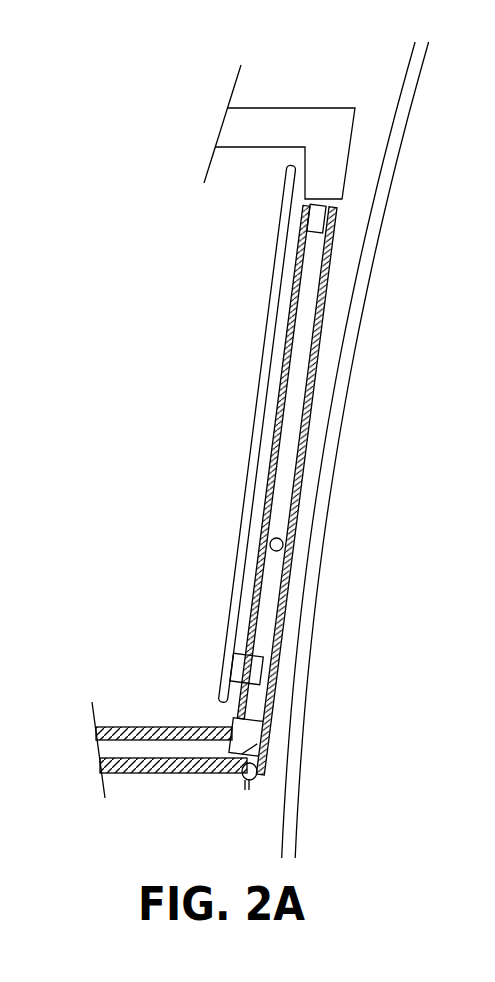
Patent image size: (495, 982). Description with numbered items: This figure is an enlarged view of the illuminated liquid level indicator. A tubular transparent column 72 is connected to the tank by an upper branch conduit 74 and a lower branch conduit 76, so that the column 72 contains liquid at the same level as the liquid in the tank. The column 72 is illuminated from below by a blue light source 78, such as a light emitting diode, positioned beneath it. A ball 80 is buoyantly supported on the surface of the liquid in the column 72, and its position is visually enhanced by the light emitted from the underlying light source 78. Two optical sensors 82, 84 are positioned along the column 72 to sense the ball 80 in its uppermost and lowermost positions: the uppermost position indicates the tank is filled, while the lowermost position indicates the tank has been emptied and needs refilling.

The tubular transparent column 72 is at (315, 399).
The upper branch conduit 74 is at (270, 107).
The lower branch conduit 76 is at (168, 773).
The blue light source 78 is at (258, 779).
The ball 80 is at (283, 545).
The optical sensor 82 is at (298, 213).
The optical sensor 84 is at (237, 668).